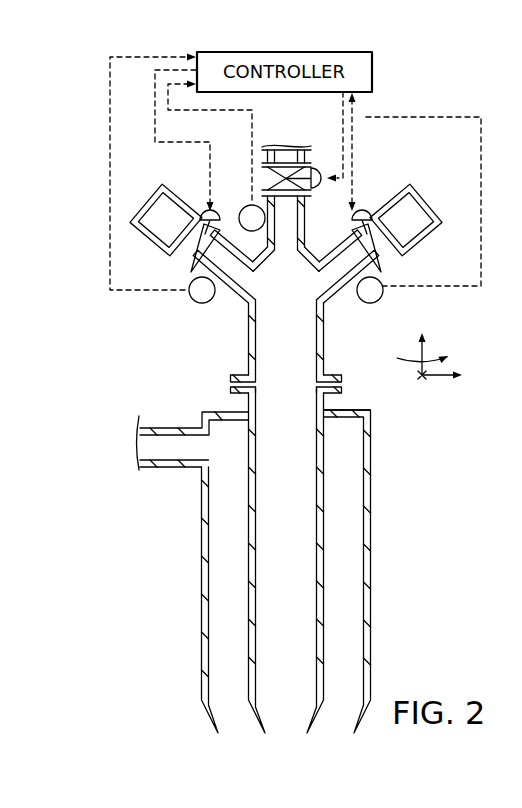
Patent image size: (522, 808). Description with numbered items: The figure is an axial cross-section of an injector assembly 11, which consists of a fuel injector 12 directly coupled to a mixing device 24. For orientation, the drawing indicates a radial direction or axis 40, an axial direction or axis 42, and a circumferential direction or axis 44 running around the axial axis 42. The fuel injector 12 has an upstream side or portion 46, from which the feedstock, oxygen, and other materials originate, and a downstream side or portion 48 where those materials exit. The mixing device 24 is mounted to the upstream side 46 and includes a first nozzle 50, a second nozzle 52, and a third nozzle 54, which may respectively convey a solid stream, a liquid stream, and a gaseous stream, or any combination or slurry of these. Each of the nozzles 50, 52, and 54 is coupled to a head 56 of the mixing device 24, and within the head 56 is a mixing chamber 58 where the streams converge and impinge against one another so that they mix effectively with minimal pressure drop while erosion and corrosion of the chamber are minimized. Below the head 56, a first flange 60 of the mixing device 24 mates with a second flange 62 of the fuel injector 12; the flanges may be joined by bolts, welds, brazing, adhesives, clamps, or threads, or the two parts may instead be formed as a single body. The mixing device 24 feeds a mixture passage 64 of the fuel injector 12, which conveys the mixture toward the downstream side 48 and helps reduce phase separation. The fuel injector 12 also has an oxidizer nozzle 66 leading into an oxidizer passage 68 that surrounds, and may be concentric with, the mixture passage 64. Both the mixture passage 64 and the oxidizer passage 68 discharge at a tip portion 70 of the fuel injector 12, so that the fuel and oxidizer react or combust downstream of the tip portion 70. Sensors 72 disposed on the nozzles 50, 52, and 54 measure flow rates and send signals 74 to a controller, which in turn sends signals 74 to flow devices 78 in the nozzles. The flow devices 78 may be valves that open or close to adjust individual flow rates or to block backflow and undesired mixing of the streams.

The injector assembly 11 is at (418, 430).
The fuel injector 12 is at (381, 571).
The mixing device 24 is at (228, 322).
The radial direction or axis 40 is at (450, 365).
The axial direction or axis 42 is at (424, 350).
The circumferential direction or axis 44 is at (447, 360).
The upstream side or portion 46 is at (181, 174).
The downstream side or portion 48 is at (180, 627).
The first nozzle 50 is at (163, 250).
The second nozzle 52 is at (264, 158).
The third nozzle 54 is at (412, 235).
The head 56 is at (312, 253).
The mixing chamber 58 is at (292, 295).
The first flange 60 is at (326, 372).
The second flange 62 is at (326, 398).
The mixture passage 64 is at (340, 478).
The oxidizer nozzle 66 is at (163, 468).
The oxidizer passage 68 is at (203, 546).
The tip portion 70 is at (288, 752).
The sensor 72 is at (244, 208).
The signal 74 is at (174, 85).
The flow device 78 is at (314, 166).